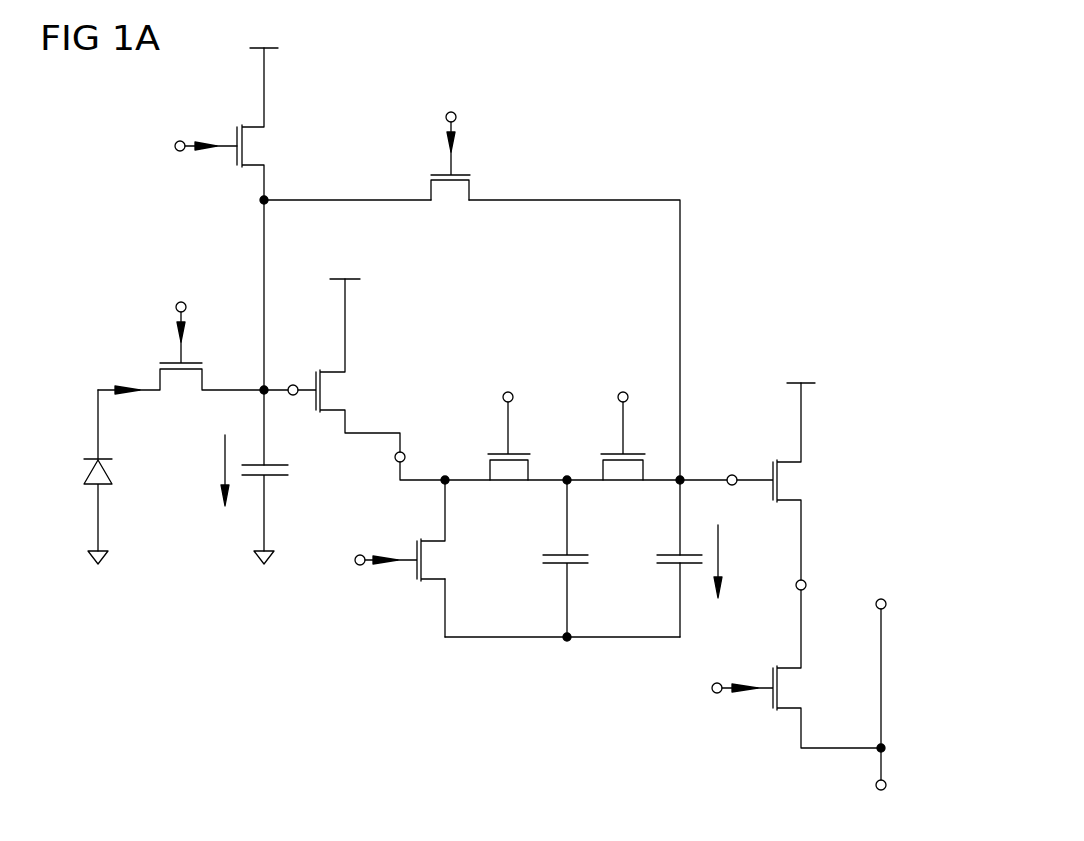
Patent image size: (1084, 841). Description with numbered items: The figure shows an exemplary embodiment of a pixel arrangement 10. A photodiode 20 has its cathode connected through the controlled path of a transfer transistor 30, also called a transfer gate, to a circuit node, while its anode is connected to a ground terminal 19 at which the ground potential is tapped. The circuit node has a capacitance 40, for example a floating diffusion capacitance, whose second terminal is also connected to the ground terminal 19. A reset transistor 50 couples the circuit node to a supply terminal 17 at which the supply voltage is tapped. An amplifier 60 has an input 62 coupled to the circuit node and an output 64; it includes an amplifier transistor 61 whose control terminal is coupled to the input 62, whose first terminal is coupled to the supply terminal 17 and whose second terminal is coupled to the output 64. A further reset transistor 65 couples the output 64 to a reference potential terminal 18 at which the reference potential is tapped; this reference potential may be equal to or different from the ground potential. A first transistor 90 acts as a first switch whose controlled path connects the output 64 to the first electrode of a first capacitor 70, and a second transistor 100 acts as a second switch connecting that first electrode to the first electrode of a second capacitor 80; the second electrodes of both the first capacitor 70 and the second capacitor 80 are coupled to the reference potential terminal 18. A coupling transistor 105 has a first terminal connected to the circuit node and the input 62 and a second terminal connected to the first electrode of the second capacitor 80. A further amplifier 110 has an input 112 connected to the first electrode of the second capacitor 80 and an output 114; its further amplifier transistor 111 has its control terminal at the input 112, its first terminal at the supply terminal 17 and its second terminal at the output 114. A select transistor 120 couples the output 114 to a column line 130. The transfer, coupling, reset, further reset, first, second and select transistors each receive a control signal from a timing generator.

The pixel arrangement 10 is at (740, 80).
The supply terminal 17 is at (268, 51).
The reference potential terminal 18 is at (567, 642).
The ground terminal 19 is at (103, 548).
The photodiode 20 is at (86, 470).
The transfer transistor 30 is at (178, 372).
The capacitance 40 is at (290, 470).
The reset transistor 50 is at (243, 146).
The amplifier 60 is at (379, 371).
The amplifier transistor 61 is at (325, 392).
The input 62 is at (294, 382).
The output 64 is at (406, 455).
The further reset transistor 65 is at (416, 548).
The first capacitor 70 is at (543, 557).
The second capacitor 80 is at (657, 560).
The first transistor 90 is at (510, 462).
The second transistor 100 is at (625, 462).
The coupling transistor 105 is at (451, 182).
The further amplifier 110 is at (779, 450).
The further amplifier transistor 111 is at (778, 482).
The input 112 is at (733, 475).
The output 114 is at (808, 582).
The select transistor 120 is at (780, 694).
The column line 130 is at (883, 675).